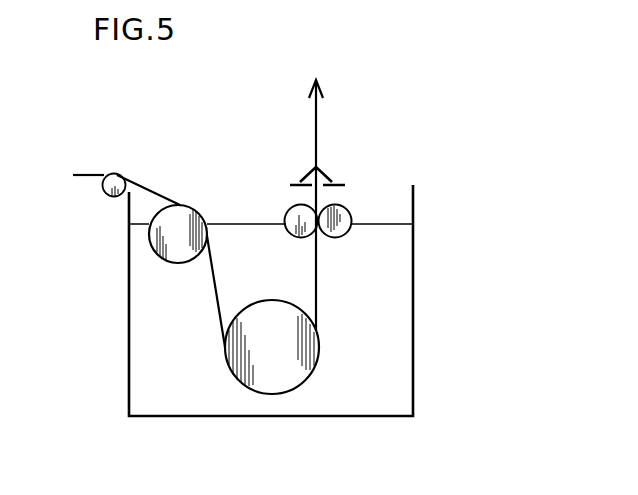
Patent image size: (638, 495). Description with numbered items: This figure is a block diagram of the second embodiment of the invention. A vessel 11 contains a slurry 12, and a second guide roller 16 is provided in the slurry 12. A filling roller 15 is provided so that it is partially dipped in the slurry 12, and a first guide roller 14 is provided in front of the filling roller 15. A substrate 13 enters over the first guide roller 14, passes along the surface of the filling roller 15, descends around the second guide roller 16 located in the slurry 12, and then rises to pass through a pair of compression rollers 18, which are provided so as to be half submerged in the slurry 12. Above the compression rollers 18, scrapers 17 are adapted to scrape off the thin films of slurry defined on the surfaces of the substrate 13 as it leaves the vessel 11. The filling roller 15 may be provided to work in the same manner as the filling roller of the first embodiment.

The vessel 11 is at (414, 190).
The slurry 12 is at (405, 346).
The substrate 13 is at (317, 112).
The first guide roller 14 is at (107, 197).
The filling roller 15 is at (153, 259).
The second guide roller 16 is at (253, 392).
The scrapers 17 is at (319, 167).
The compression rollers 18 is at (306, 204).